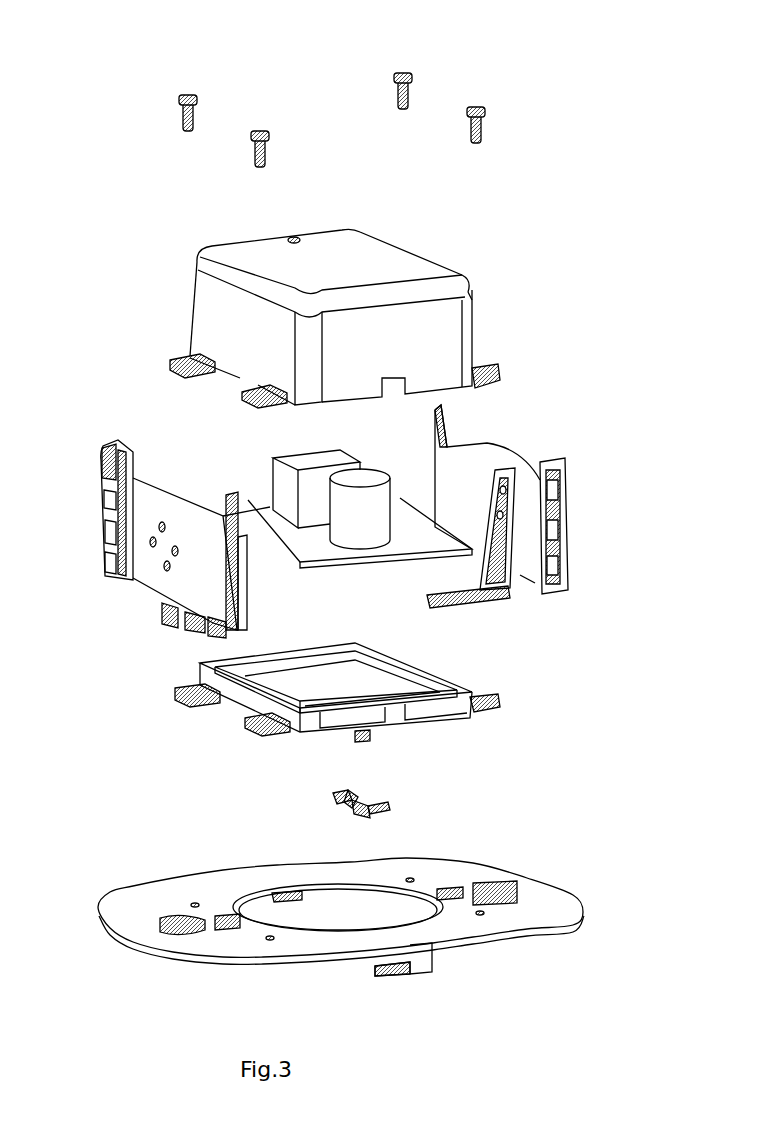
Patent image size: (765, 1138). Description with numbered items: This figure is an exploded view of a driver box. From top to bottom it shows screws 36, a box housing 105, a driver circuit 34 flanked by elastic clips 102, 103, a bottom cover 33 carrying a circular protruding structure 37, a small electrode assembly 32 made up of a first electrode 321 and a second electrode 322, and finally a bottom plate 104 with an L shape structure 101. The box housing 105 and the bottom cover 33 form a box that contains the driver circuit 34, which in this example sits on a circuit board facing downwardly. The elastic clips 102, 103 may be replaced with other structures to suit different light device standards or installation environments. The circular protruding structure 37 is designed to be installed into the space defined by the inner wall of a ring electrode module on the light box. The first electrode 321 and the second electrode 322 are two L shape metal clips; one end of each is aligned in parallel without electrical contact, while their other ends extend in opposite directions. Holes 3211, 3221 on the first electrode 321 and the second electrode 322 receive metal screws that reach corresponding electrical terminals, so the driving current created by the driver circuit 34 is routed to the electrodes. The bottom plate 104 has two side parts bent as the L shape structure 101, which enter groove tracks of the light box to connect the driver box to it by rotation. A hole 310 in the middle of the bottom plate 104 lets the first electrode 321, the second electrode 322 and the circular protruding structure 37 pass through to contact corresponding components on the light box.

The screws 36 is at (410, 88).
The box housing 105 is at (447, 323).
The elastic clip 102 is at (126, 518).
The elastic clip 103 is at (560, 520).
The driver circuit 34 is at (350, 535).
The bottom cover 33 is at (416, 710).
The circular protruding structure 37 is at (338, 741).
The fastening element 32 is at (479, 797).
The hole 3221 is at (348, 795).
The hole 3211 is at (412, 791).
The second electrode 322 is at (345, 810).
The first electrode 321 is at (365, 818).
The bottom plate 104 is at (388, 940).
The hole 310 is at (345, 922).
The L shape structure 101 is at (420, 968).